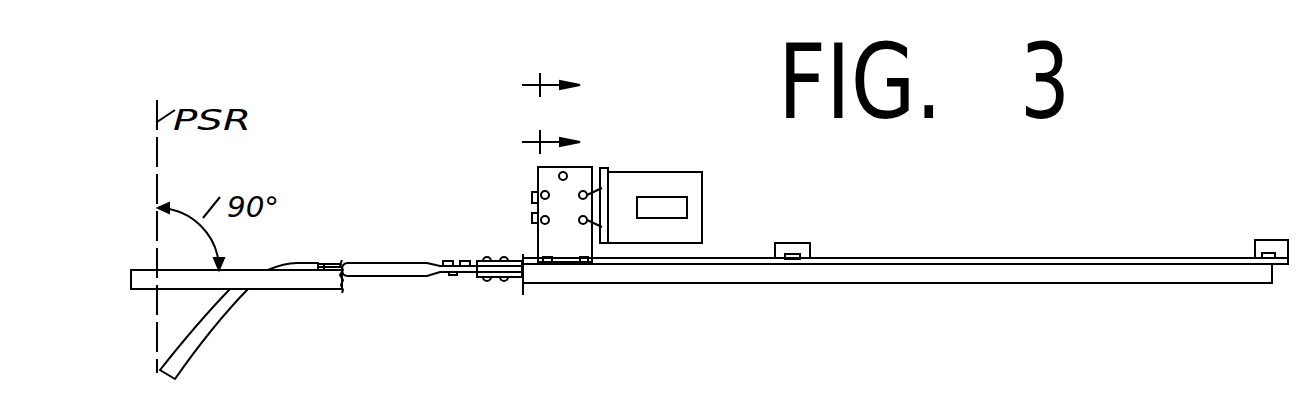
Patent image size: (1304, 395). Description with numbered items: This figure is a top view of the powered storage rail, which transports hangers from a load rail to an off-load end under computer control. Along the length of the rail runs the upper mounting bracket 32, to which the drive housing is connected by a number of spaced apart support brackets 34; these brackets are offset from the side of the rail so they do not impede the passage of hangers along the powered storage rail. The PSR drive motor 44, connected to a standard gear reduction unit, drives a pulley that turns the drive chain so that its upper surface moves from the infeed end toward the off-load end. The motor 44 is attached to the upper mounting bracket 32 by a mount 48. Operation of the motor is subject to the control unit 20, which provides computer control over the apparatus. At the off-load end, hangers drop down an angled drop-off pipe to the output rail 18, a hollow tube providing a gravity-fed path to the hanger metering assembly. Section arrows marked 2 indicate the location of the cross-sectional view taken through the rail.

The section line 2- 2 is at (537, 114).
The output rail 18 is at (197, 343).
The control unit 20 is at (377, 385).
The upper mounting bracket 32 is at (1073, 273).
The support brackets 34 is at (795, 252).
The PSR drive motor 44 is at (648, 180).
The mount 48 is at (563, 227).